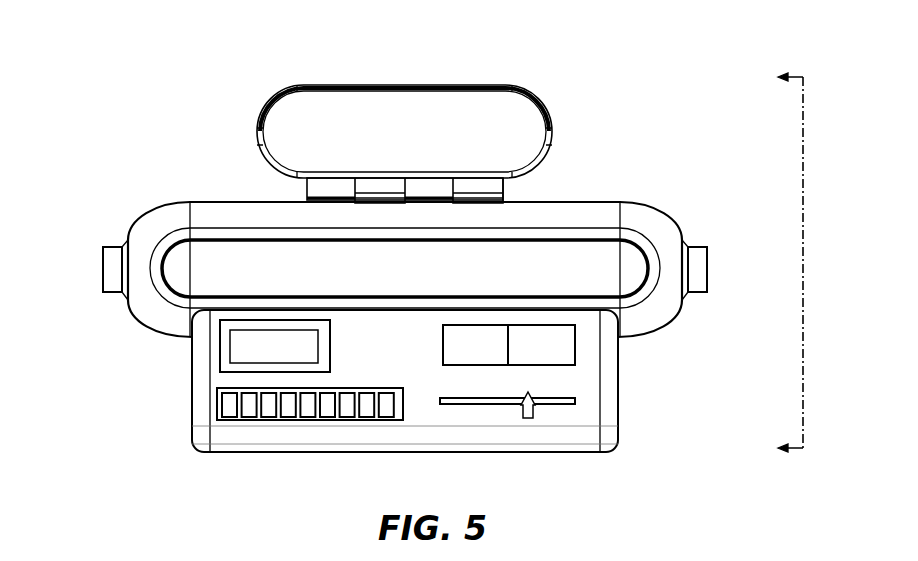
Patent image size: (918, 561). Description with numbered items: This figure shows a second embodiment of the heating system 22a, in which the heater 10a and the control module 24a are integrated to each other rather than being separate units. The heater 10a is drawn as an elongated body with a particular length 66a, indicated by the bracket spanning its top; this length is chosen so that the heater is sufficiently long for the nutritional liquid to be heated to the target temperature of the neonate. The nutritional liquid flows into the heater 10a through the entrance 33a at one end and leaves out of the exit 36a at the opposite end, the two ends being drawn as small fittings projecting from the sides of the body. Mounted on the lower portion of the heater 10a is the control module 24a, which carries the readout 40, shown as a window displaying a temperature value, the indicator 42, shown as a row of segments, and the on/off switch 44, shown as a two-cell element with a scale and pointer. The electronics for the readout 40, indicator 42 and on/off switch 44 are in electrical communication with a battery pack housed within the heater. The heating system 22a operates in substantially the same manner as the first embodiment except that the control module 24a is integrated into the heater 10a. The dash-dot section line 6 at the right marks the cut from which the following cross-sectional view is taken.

The length 66a is at (705, 78).
The entrance 33a is at (103, 262).
The exit 36a is at (707, 262).
The heating system 22a is at (90, 84).
The heater 10a is at (735, 83).
The control module 24a is at (715, 278).
The readout 40 is at (230, 347).
The indicator 42 is at (312, 405).
The on/off switch 44 is at (458, 347).
The section line 6 is at (782, 264).